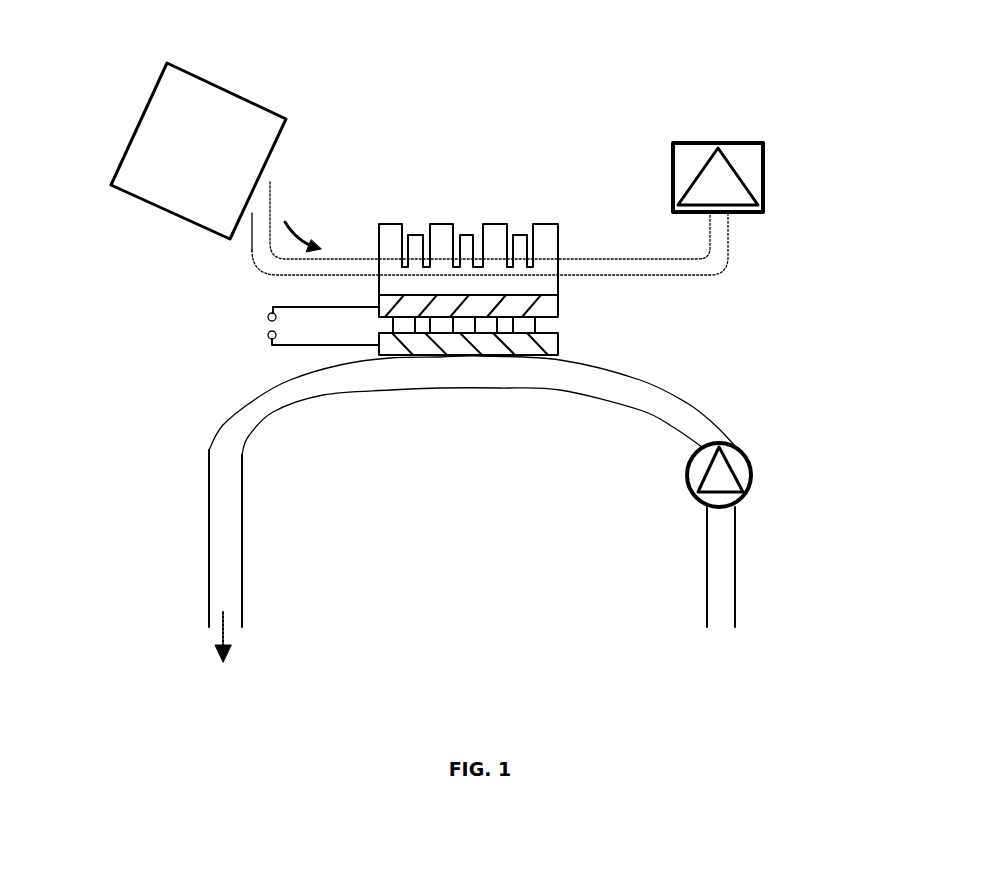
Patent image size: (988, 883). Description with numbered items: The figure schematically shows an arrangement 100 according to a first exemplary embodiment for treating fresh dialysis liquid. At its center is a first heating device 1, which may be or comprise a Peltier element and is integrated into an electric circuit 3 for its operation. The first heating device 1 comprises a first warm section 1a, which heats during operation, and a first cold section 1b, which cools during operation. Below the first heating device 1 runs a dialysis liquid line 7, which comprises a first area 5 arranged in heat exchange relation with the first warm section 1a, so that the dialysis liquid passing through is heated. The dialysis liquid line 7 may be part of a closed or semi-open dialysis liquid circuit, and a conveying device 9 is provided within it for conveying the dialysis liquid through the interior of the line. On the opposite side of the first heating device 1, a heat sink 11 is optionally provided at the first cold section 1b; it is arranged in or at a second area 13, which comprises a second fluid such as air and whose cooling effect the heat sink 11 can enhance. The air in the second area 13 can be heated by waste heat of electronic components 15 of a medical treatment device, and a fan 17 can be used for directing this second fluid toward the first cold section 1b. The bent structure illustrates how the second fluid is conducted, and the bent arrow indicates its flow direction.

The arrangement 100 is at (507, 113).
The first heating device 1 is at (548, 271).
The first warm section 1a is at (553, 345).
The first cold section 1b is at (550, 312).
The electric circuit 3 is at (289, 348).
The first area 5 is at (467, 378).
The dialysis liquid line 7 is at (722, 608).
The conveying device 9 is at (740, 470).
The heat sink 11 is at (385, 232).
The second area 13 is at (478, 262).
The electronic components 15 is at (168, 118).
The fan 17 is at (750, 190).